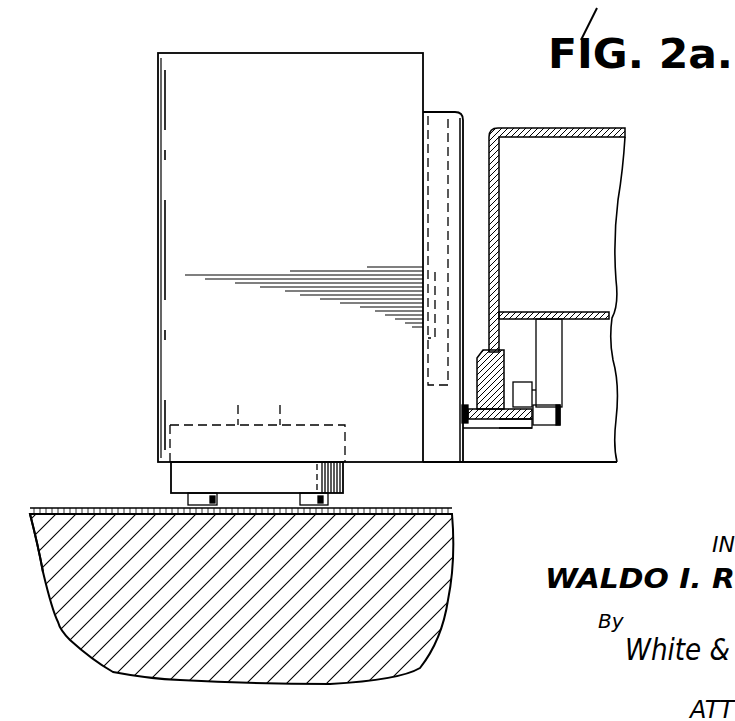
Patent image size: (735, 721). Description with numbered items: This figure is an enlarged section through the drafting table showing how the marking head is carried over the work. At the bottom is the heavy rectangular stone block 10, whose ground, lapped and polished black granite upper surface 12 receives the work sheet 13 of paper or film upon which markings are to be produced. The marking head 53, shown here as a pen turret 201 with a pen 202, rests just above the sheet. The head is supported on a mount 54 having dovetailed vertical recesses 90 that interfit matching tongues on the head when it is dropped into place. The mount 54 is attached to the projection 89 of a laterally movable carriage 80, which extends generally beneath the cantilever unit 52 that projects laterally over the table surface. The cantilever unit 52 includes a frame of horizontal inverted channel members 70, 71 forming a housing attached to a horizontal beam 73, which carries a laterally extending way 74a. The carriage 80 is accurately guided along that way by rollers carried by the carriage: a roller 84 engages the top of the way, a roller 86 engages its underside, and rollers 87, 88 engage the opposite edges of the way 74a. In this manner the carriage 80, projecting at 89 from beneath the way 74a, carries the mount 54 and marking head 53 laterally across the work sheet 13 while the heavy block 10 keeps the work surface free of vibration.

The stone block 10 is at (410, 571).
The upper surface 12 is at (32, 512).
The work sheet 13 is at (428, 508).
The cantilever unit 52 is at (540, 126).
The marking head 53 is at (290, 257).
The mount 54 is at (467, 223).
The inverted channel member 70 is at (555, 312).
The inverted channel member 71 is at (605, 128).
The horizontal beam 73 is at (496, 365).
The way 74a is at (496, 428).
The laterally movable carriage 80 is at (587, 462).
The roller 84 is at (523, 396).
The roller 86 is at (530, 425).
The roller 87 is at (561, 420).
The roller 88 is at (462, 413).
The carriage projection 89 is at (484, 452).
The dovetailed vertical recesses 90 is at (440, 158).
The pen turret 201 is at (257, 479).
The pen 202 is at (330, 506).